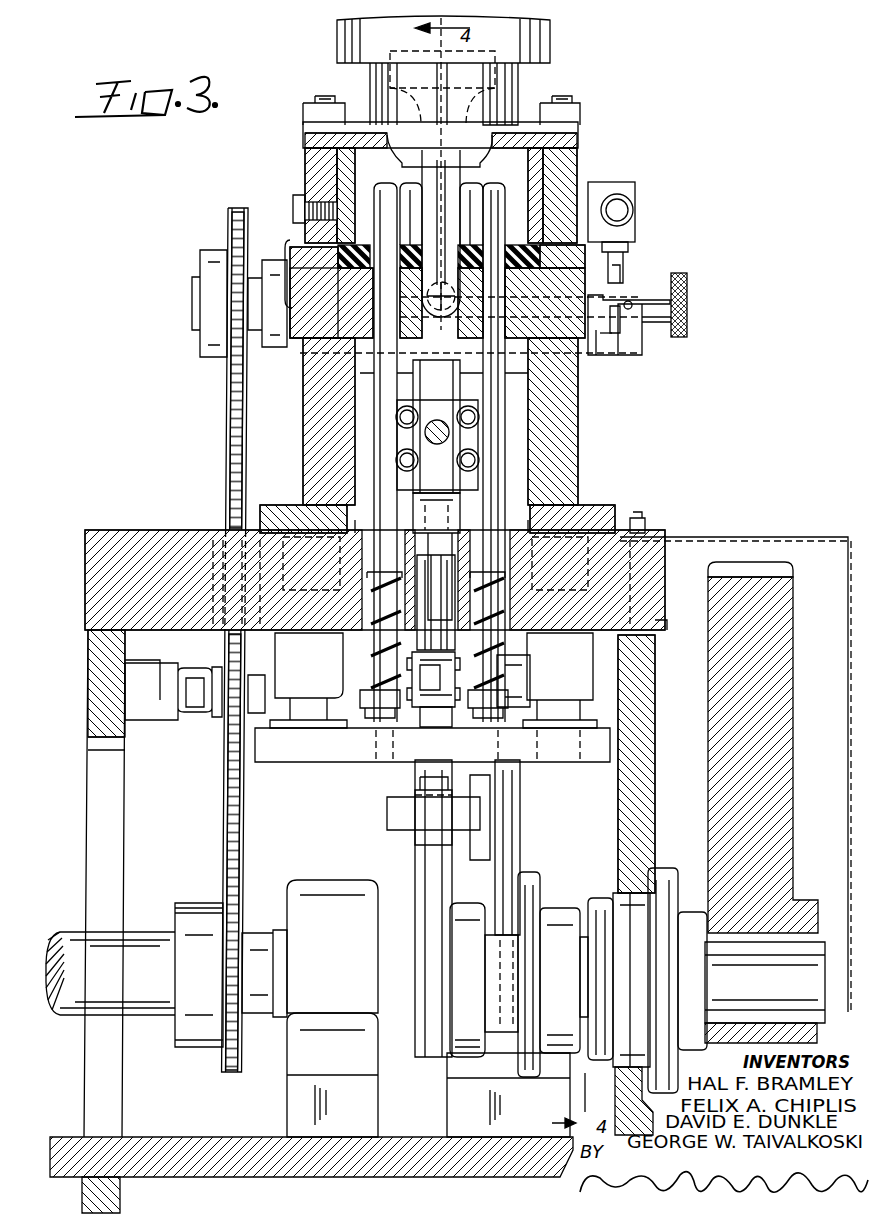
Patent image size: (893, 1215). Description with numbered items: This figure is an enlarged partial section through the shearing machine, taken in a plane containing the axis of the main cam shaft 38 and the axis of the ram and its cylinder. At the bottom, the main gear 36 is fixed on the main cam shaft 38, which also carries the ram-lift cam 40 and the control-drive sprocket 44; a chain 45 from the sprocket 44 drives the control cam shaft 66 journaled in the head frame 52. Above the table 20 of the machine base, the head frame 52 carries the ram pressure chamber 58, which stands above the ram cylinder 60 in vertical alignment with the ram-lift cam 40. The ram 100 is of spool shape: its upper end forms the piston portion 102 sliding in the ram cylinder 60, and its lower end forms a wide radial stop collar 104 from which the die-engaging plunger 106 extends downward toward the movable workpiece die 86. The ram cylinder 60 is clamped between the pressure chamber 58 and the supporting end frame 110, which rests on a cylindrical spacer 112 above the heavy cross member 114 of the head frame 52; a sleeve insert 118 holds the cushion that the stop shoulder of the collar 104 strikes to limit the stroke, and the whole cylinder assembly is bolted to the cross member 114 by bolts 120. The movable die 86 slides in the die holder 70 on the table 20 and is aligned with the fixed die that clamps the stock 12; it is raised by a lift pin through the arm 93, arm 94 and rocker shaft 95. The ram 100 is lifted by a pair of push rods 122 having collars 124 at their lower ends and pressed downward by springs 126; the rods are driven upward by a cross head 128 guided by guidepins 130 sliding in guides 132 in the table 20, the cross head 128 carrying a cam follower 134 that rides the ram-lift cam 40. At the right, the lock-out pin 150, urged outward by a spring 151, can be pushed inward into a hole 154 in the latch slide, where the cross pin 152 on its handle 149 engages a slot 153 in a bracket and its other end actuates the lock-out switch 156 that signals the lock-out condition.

The ram pressure chamber 58 is at (538, 32).
The piston portion 102 is at (481, 54).
The ram cylinder 60 is at (492, 83).
The bolts 120 is at (303, 100).
The supporting end frame 110 is at (580, 135).
The ram 100 is at (376, 436).
The radial stop collar 104 is at (485, 177).
The push rods 122 is at (380, 210).
The cylindrical spacer 112 is at (322, 196).
The sleeve insert 118 is at (325, 202).
The die-engaging plunger 106 is at (458, 233).
The cross member 114 is at (318, 272).
The spring 151 is at (492, 291).
The hole 154 is at (422, 318).
The cross pin 152 is at (630, 302).
The lock-out switch 156 is at (632, 226).
The lock-out pin 150 is at (582, 346).
The handle 149 is at (688, 288).
The slot 153 is at (620, 323).
The control cam shaft 66 is at (195, 300).
The chain 45 is at (215, 640).
The head frame 52 is at (560, 443).
The movable workpiece die 86 is at (430, 415).
The die holder 70 is at (474, 448).
The stock 12 is at (450, 433).
The table 20 is at (197, 548).
The guides 132 is at (600, 675).
The springs 126 is at (378, 652).
The collars 124 is at (470, 695).
The arm 93 is at (432, 697).
The rocker shaft 95 is at (512, 675).
The cross head 128 is at (343, 758).
The guidepins 130 is at (310, 763).
The control-drive sprocket 44 is at (236, 932).
The ram-lift cam 40 is at (430, 897).
The cam follower 134 is at (425, 820).
The arm 94 is at (516, 817).
The main gear 36 is at (780, 790).
The main cam shaft 38 is at (782, 993).